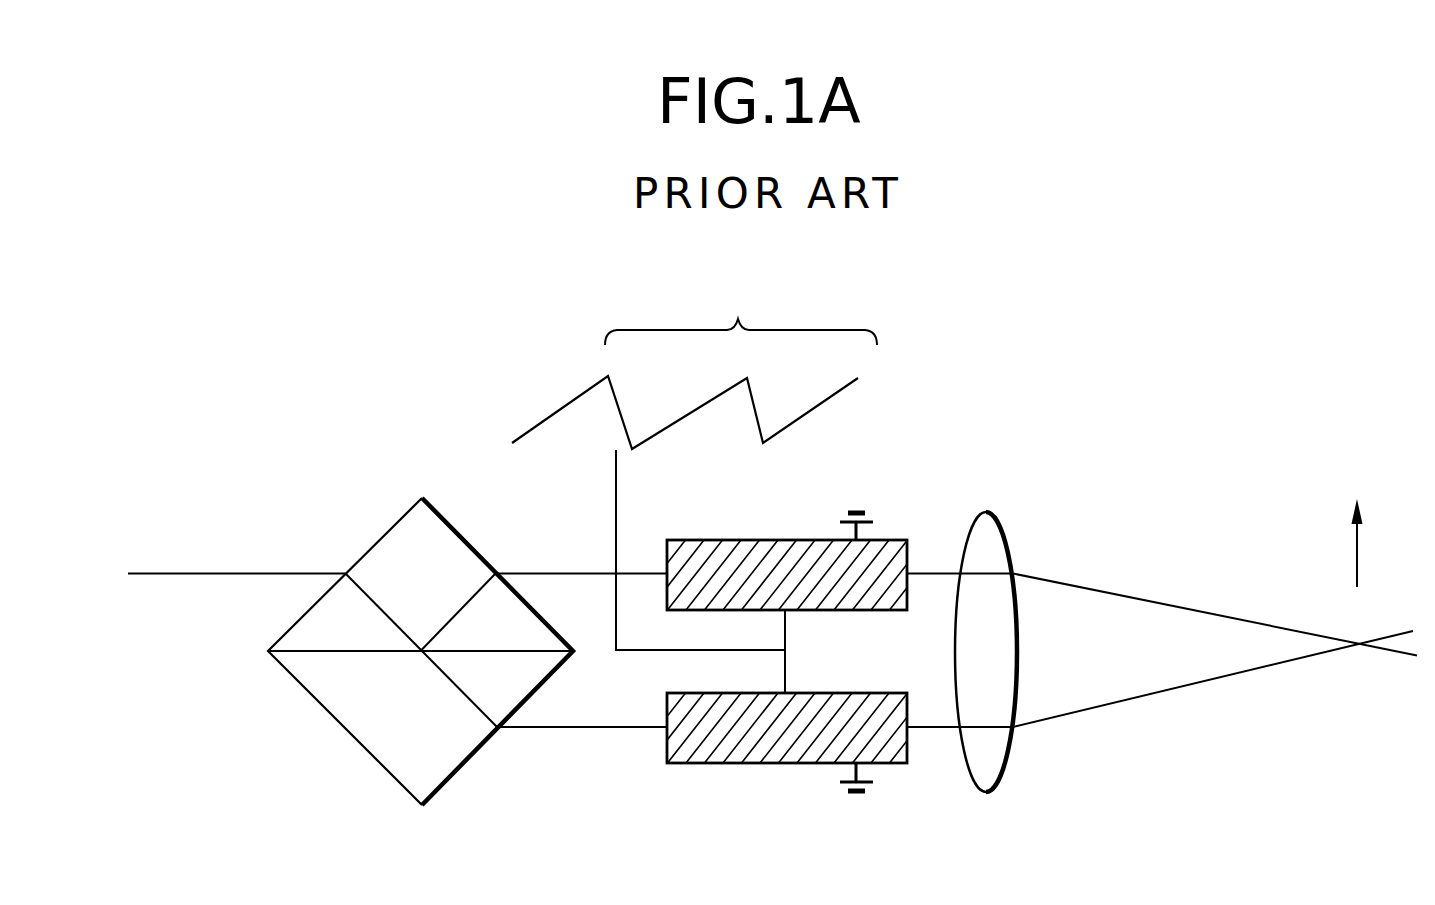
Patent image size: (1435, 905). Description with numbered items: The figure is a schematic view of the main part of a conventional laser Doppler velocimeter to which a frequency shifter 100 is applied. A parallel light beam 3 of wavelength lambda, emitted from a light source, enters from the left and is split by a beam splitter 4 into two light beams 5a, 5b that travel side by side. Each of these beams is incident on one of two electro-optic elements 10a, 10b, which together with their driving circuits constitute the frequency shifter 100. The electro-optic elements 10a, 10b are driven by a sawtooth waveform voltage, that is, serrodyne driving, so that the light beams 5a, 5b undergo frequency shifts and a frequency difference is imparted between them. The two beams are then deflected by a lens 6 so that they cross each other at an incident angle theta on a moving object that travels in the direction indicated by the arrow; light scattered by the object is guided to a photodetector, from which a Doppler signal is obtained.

The parallel light beam 3 is at (257, 572).
The beam splitter 4 is at (412, 537).
The light beam 5a is at (565, 573).
The light beam 5b is at (588, 728).
The lens 6 is at (1010, 538).
The electro-optic element 10a is at (762, 548).
The electro-optic element 10b is at (760, 764).
The frequency shifter 100 is at (728, 553).